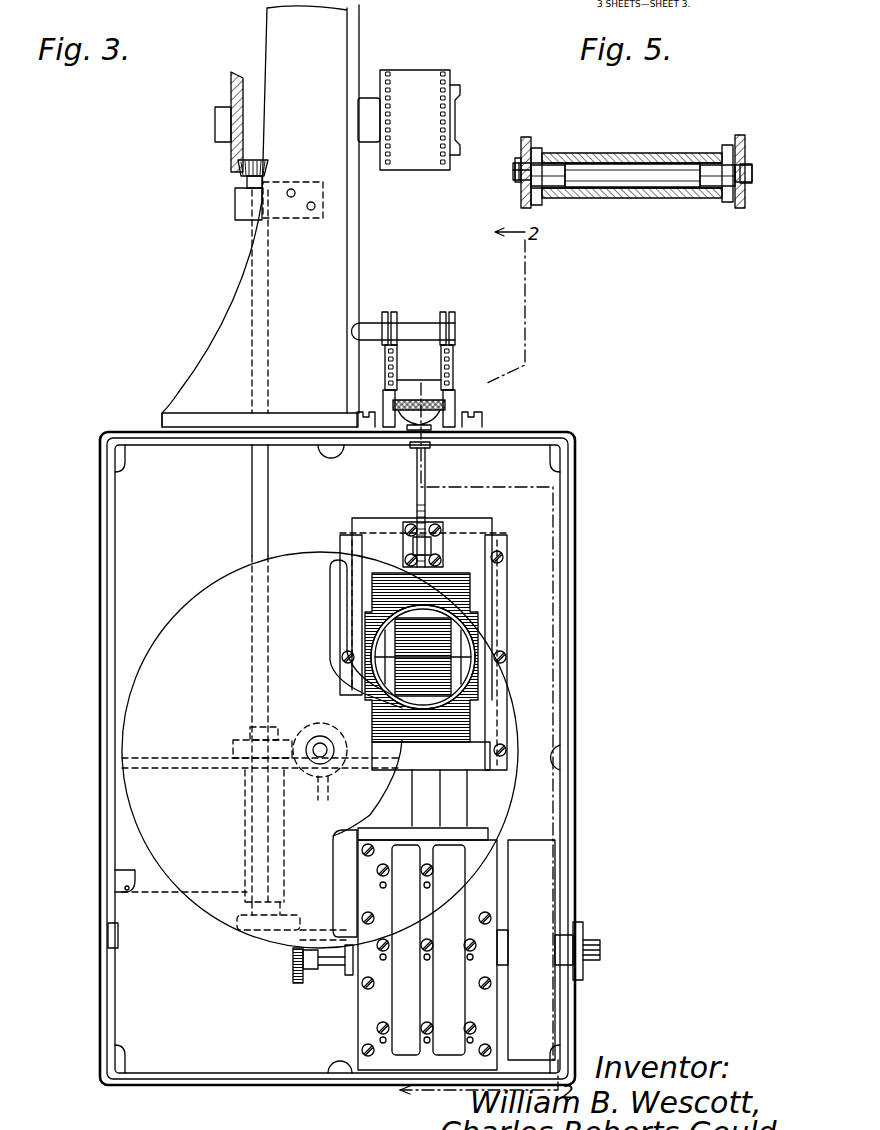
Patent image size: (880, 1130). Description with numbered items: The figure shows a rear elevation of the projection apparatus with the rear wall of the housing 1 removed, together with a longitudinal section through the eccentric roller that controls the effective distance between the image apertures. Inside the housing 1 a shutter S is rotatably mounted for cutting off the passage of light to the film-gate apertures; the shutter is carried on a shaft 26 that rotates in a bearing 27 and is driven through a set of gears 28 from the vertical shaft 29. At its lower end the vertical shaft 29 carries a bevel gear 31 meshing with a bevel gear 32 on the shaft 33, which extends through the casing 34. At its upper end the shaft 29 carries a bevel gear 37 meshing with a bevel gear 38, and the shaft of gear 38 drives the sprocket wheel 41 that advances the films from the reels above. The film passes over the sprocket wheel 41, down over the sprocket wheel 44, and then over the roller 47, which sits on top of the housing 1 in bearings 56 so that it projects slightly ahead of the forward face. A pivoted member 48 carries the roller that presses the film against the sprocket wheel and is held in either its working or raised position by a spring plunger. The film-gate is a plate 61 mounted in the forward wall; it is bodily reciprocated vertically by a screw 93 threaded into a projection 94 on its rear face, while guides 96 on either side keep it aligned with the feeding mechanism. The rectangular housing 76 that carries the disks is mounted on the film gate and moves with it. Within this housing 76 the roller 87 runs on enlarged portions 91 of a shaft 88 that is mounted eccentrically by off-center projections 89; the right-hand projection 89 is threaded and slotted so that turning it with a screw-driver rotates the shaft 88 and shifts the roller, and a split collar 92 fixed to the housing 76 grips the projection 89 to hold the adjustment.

In FIG. 3, the housing 1 is at (573, 893).
In FIG. 3, the shaft 26 is at (318, 747).
In FIG. 3, the bearing 27 is at (318, 765).
In FIG. 3, the set of gears 28 is at (246, 750).
In FIG. 3, the vertical shaft 29 is at (250, 248).
In FIG. 3, the bevel gear 31 is at (237, 925).
In FIG. 3, the bevel gear 32 is at (298, 985).
In FIG. 3, the shaft 33 is at (336, 958).
In FIG. 3, the casing 34 is at (370, 1020).
In FIG. 3, the bevel gear 37 is at (240, 178).
In FIG. 3, the bevel gear 38 is at (231, 152).
In FIG. 3, the sprocket wheel 41 is at (417, 162).
In FIG. 3, the sprocket wheel 44 is at (453, 365).
In FIG. 3, the roller 47 is at (456, 400).
In FIG. 3, the member 48 is at (370, 330).
In FIG. 3, the bearings 56 is at (358, 416).
In FIG. 3, the plate (film-gate) 61 is at (472, 518).
In FIG. 5, the rectangular housing 76 is at (522, 200).
In FIG. 5, the roller 87 is at (704, 152).
In FIG. 5, the shaft 88 is at (641, 172).
In FIG. 5, the projections 89 is at (513, 170).
In FIG. 5, the enlarged portions 91 is at (548, 180).
In FIG. 5, the split collar 92 is at (520, 158).
In FIG. 3, the screw 93 is at (426, 477).
In FIG. 3, the projection 94 is at (408, 534).
In FIG. 3, the guides 96 is at (345, 541).
In FIG. 3, the shutter S is at (222, 578).